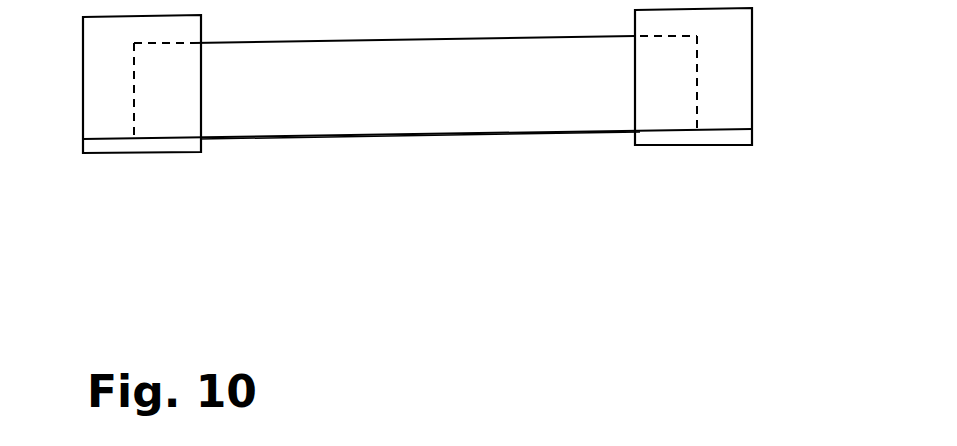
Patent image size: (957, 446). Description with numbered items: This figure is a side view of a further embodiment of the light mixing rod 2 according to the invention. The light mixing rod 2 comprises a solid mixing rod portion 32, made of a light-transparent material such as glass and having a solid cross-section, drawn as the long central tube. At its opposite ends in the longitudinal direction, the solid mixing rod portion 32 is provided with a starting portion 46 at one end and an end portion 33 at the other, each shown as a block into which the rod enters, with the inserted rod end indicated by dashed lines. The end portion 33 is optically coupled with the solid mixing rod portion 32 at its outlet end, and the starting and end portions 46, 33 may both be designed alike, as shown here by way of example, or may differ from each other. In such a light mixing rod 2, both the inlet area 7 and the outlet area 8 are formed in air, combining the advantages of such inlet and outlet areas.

The light mixing rod 2 is at (283, 137).
The inlet area 7 is at (82, 118).
The outlet area 8 is at (752, 110).
The solid mixing rod portion 32 is at (382, 135).
The end portion 33 is at (700, 145).
The starting portion 46 is at (138, 153).